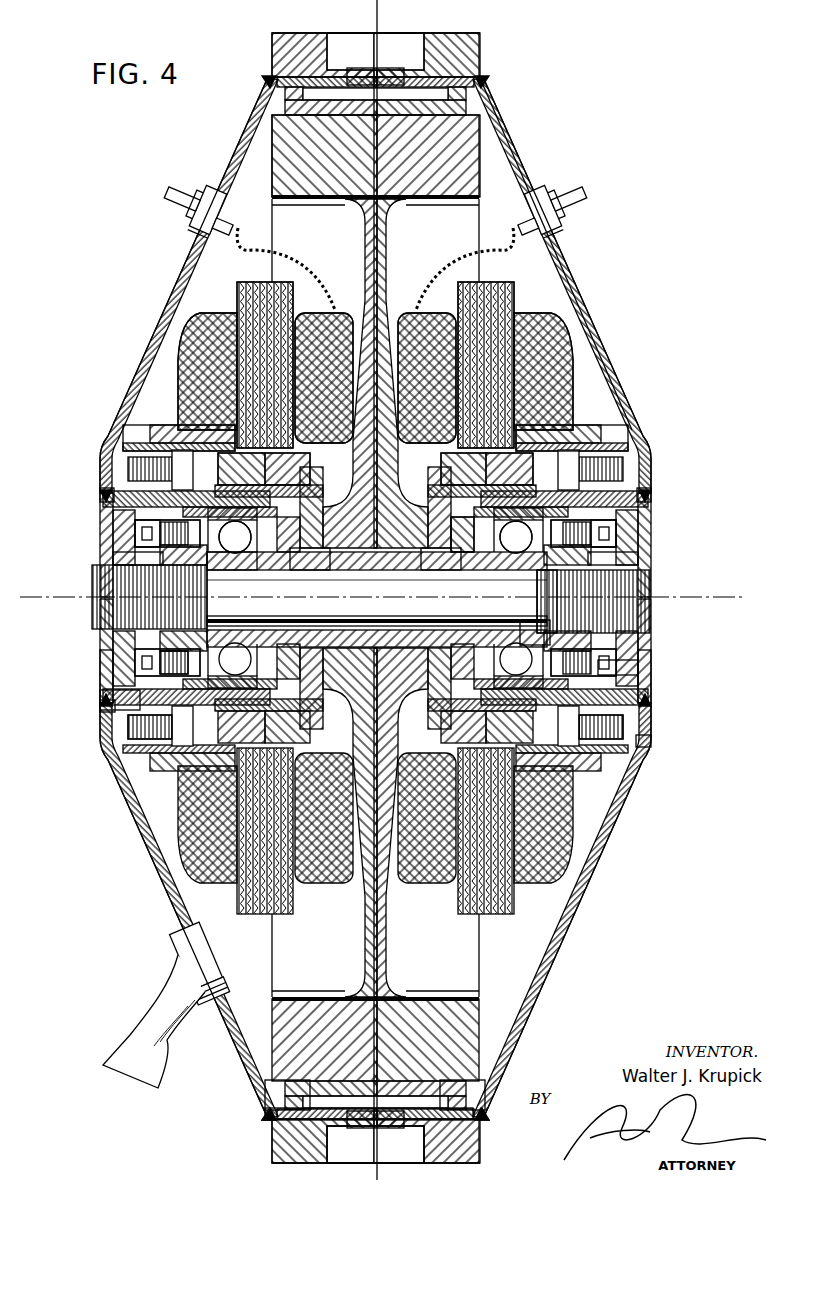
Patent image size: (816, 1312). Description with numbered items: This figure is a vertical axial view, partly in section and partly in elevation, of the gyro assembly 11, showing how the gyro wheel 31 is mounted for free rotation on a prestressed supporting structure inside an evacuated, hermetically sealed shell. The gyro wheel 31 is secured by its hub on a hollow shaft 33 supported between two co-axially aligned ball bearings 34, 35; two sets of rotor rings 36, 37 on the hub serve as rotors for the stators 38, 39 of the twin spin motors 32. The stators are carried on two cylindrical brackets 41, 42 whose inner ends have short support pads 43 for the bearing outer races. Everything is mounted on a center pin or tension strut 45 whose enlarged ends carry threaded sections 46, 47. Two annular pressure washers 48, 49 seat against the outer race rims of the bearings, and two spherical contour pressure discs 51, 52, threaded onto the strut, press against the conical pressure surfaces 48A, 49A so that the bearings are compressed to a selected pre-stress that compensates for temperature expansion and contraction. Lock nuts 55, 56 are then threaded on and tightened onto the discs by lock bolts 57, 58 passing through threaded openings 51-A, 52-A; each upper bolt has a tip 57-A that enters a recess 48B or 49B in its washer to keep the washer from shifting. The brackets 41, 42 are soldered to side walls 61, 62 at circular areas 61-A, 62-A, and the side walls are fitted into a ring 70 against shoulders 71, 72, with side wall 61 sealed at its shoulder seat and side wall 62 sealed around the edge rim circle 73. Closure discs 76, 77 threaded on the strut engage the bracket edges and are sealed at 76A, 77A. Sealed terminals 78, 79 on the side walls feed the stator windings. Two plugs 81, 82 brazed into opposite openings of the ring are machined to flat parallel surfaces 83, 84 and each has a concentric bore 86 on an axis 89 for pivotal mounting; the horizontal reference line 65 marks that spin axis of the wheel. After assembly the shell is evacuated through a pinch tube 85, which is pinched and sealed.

The gyro assembly 11 is at (498, 172).
The gyro wheel 31 is at (480, 192).
The twin spin motors 32 is at (187, 348).
The hollow shaft 33 is at (260, 556).
The ball bearing 34 is at (218, 568).
The ball bearing 35 is at (495, 570).
The rotor rings 36 is at (305, 560).
The rotor rings 37 is at (457, 563).
The stator 38 is at (237, 295).
The stator 39 is at (515, 305).
The cylindrical bracket 41 is at (192, 495).
The cylindrical bracket 42 is at (547, 497).
The support pads 43 is at (506, 550).
The tension strut 45 is at (377, 599).
The threaded section 46 is at (100, 606).
The threaded section 47 is at (640, 613).
The annular pressure washer 48 is at (208, 692).
The pressure surface 48A is at (225, 625).
The recess 48B is at (150, 706).
The annular pressure washer 49 is at (548, 700).
The pressure surface 49A is at (540, 640).
The recess 49B is at (603, 668).
The spherical contour pressure disc 51 is at (190, 655).
The threaded opening 51-A is at (152, 517).
The spherical contour pressure disc 52 is at (546, 597).
The threaded opening 52-A is at (603, 523).
The lock nut 55 is at (147, 558).
The lock nut 56 is at (603, 565).
The lock bolt 57 is at (134, 538).
The bolt tip 57-A is at (110, 505).
The lock bolt 58 is at (638, 538).
The side wall 61 is at (140, 383).
The solder seal circular area 61-A is at (137, 428).
The side wall 62 is at (617, 392).
The solder seal circular area 62-A is at (640, 434).
The spin axis 65 is at (43, 596).
The ring 70 is at (266, 1120).
The shoulder 71 is at (262, 1082).
The shoulder 72 is at (478, 1093).
The edge rim circle 73 is at (266, 1110).
The closure disc 76 is at (98, 672).
The circular solder seal 76A is at (108, 709).
The closure disc 77 is at (647, 710).
The circular solder seal 77A is at (641, 737).
The sealed through terminal 78 is at (177, 195).
The sealed through terminal 79 is at (577, 207).
The plug 81 is at (272, 47).
The plug 82 is at (266, 1141).
The flat parallel surface 83 is at (287, 1167).
The flat parallel surface 84 is at (288, 33).
The pinch tube 85 is at (160, 997).
The concentric bore 86 is at (417, 45).
The axis 89 is at (372, 1152).